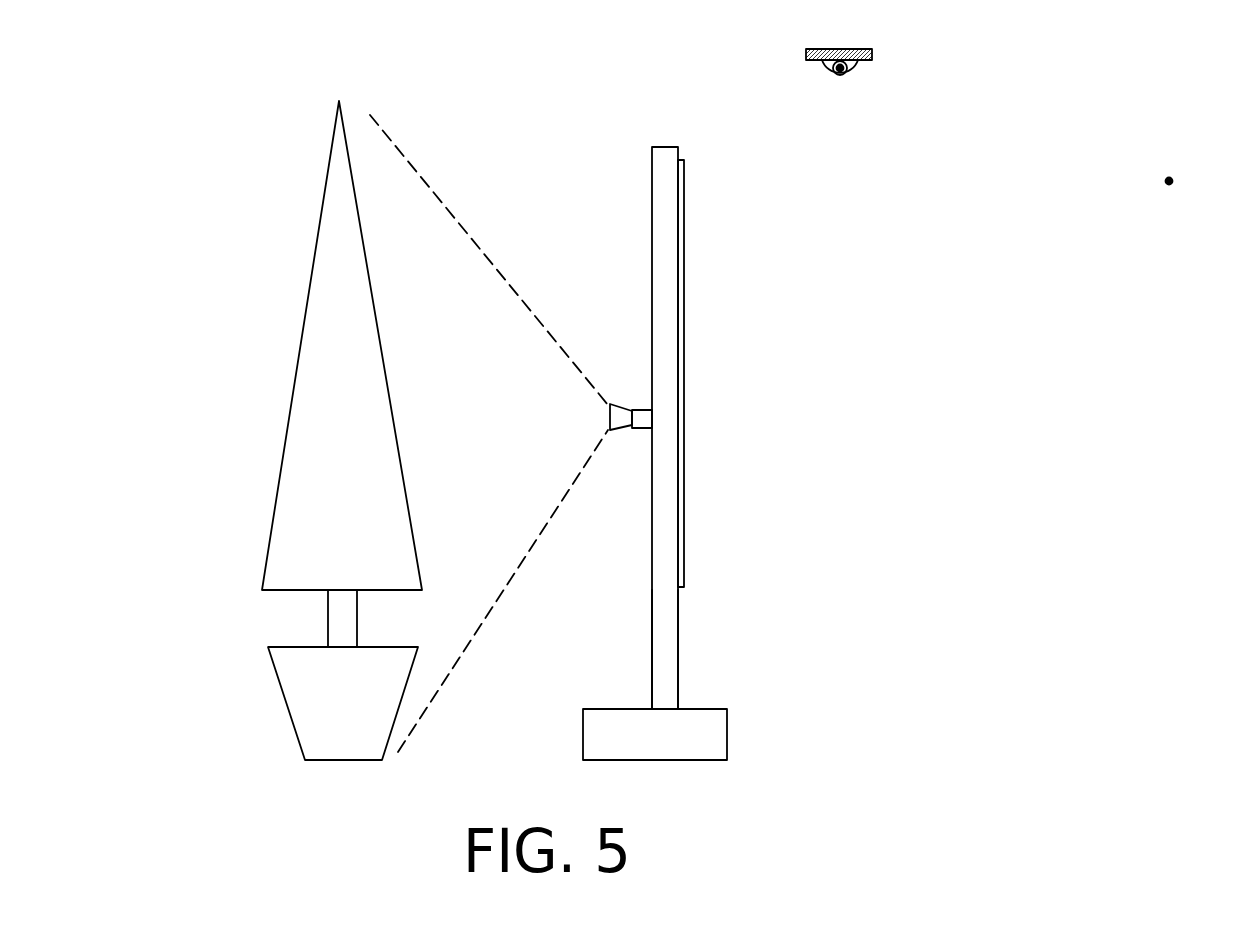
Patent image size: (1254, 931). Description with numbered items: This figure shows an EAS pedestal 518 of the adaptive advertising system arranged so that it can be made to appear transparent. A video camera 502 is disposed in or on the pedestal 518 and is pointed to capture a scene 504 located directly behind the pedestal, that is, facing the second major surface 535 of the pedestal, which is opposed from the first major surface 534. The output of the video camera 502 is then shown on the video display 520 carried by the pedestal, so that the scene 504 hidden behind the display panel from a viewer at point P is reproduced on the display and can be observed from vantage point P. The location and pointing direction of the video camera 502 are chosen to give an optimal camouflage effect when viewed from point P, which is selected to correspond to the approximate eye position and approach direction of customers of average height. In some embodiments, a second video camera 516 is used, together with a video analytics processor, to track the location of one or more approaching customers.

The scene 504 is at (298, 469).
The video camera 502 is at (640, 428).
The pedestal 518 is at (652, 228).
The video display 520 is at (684, 268).
The second major surface 535 is at (651, 603).
The first major surface 534 is at (679, 640).
The video camera 516 is at (826, 49).
The point P is at (1180, 164).